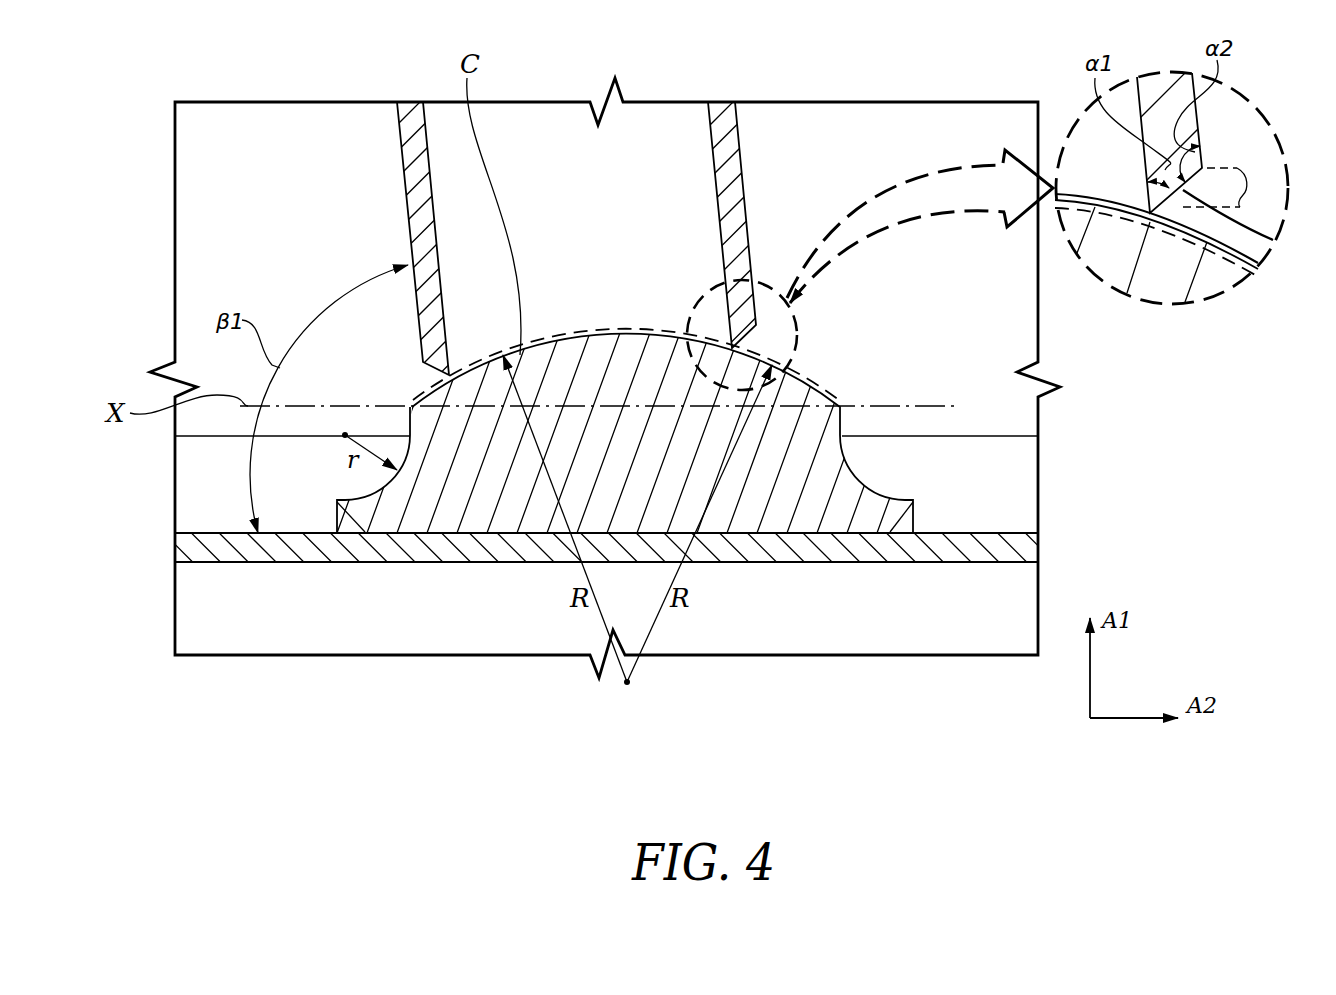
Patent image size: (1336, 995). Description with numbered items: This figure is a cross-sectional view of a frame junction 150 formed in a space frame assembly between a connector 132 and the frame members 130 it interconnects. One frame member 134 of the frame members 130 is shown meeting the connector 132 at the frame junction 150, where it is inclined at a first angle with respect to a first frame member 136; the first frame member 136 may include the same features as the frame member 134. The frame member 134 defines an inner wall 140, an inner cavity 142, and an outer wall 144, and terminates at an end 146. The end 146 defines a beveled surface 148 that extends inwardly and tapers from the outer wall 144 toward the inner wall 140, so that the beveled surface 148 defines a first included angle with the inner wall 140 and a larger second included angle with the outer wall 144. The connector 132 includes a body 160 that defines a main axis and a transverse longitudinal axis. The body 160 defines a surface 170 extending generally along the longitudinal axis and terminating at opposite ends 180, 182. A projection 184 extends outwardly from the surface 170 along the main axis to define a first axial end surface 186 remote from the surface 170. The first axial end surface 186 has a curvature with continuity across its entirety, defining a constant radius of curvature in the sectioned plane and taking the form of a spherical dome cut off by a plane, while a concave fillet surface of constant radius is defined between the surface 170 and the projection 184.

The frame member 130 is at (745, 163).
The connector 132 is at (830, 448).
The frame member 134 is at (740, 123).
The first frame member 136 is at (228, 563).
The inner wall 140 is at (743, 207).
The inner cavity 142 is at (592, 216).
The outer wall 144 is at (743, 192).
The end 146 is at (1245, 187).
The beveled surface 148 is at (1273, 240).
The frame junction 150 is at (358, 213).
The body 160 is at (848, 417).
The surface 170 is at (878, 473).
The end 180 is at (918, 523).
The end 182 is at (337, 518).
The projection 184 is at (847, 423).
The first axial end surface 186 is at (527, 347).